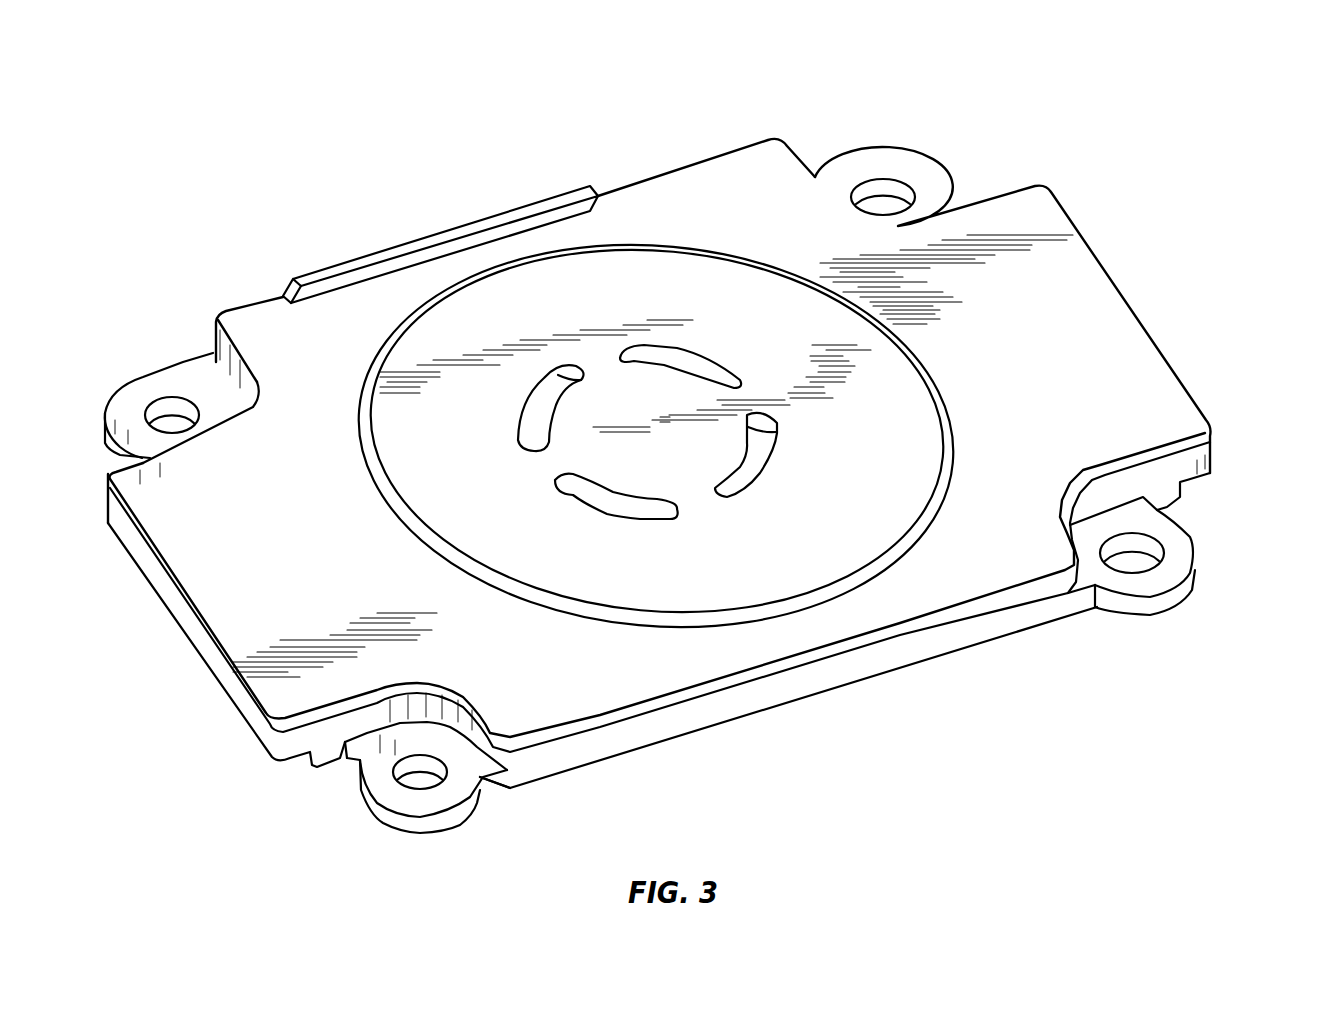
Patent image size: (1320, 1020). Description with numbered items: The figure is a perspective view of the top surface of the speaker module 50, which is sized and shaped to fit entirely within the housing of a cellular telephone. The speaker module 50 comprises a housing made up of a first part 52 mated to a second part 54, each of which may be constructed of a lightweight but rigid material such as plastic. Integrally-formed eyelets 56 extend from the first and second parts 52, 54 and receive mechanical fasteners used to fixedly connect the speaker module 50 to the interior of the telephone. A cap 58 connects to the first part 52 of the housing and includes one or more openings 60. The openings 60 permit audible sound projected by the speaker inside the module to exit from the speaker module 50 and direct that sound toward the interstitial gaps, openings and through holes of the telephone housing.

The speaker module 50 is at (1018, 104).
The first part 52 is at (1138, 400).
The second part 54 is at (948, 632).
The eyelets 56 is at (1133, 553).
The cap 58 is at (480, 320).
The openings 60 is at (533, 427).